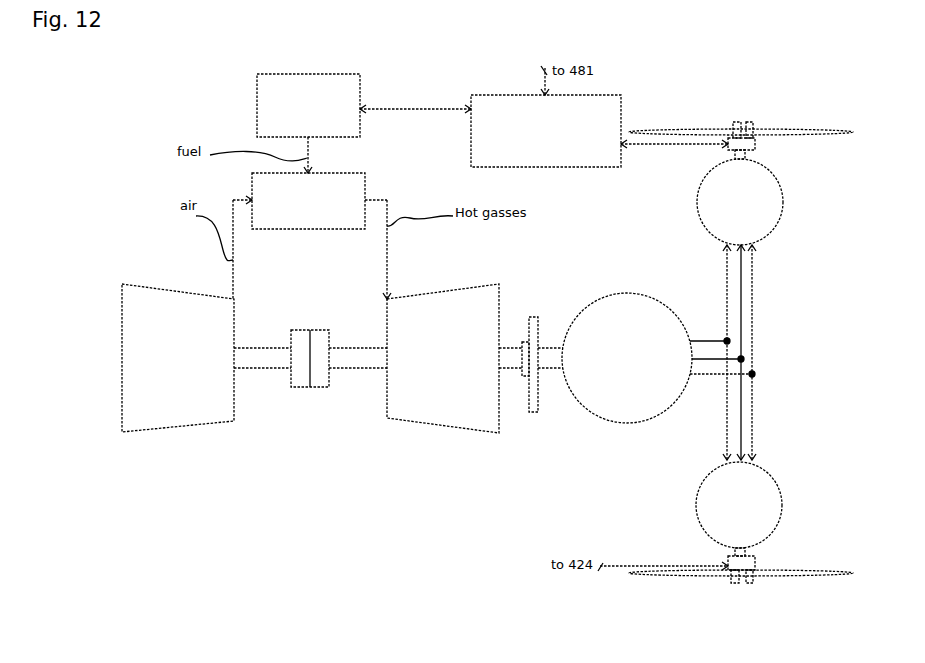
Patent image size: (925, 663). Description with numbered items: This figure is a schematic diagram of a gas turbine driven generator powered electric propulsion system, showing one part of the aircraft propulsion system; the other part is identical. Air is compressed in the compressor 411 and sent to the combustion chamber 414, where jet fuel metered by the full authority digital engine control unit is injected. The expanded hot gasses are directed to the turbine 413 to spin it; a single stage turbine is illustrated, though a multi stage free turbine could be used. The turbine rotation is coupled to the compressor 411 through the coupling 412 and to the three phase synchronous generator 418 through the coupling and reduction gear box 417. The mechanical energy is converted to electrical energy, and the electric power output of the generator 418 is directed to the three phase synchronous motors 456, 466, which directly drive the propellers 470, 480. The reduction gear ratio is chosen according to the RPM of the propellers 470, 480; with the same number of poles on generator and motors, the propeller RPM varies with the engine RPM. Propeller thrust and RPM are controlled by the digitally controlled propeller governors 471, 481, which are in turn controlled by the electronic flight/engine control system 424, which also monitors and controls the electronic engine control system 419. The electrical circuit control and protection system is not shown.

The compressor 411 is at (198, 423).
The coupling 412 is at (325, 387).
The turbine 413 is at (461, 432).
The combustion chamber 414 is at (365, 173).
The coupling and reduction gear box 417 is at (533, 317).
The 3 phase synchronous generator 418 is at (644, 422).
The electronic engine control system 419 is at (257, 107).
The electronic flight/engine control system 424 is at (538, 167).
The 3 phase synchronous motor 456 is at (772, 233).
The 3 phase synchronous motor 466 is at (782, 505).
The propeller 470 is at (742, 122).
The digitally controlled propeller governor 471 is at (730, 147).
The propeller 480 is at (738, 583).
The digitally controlled propeller governor 481 is at (757, 568).